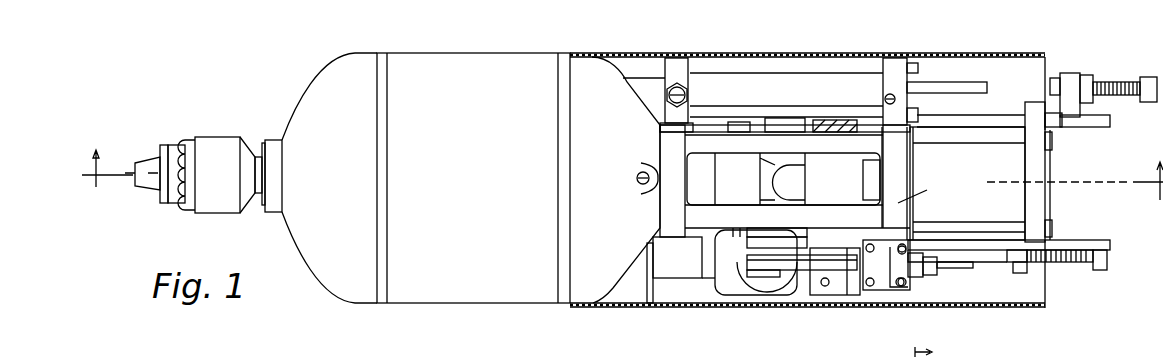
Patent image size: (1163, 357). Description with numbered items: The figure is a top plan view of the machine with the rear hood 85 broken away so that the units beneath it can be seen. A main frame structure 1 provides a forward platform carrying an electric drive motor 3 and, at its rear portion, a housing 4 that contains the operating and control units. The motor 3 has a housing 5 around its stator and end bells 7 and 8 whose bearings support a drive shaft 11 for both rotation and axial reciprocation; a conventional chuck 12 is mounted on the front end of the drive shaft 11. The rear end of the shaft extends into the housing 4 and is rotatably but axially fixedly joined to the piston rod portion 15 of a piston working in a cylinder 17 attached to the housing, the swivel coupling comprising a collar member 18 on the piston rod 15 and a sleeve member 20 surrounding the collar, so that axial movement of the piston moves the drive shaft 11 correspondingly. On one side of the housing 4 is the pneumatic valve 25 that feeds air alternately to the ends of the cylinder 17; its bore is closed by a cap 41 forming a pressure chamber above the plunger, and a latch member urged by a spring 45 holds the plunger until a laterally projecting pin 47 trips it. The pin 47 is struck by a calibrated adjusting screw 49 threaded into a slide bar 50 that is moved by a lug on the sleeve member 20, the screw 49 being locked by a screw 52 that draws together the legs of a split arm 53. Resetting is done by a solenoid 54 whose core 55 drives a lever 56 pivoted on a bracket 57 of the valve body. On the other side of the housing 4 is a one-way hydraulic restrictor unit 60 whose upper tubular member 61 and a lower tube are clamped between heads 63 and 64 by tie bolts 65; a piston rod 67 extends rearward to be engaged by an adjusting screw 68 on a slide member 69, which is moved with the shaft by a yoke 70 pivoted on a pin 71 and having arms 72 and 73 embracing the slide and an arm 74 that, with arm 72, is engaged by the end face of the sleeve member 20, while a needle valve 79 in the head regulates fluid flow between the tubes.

The main frame structure 1 is at (626, 285).
The electric drive motor 3 is at (483, 313).
The housing 4 is at (622, 176).
The motor housing 5 is at (430, 290).
The end bell 7 is at (340, 280).
The end bell 8 is at (592, 285).
The drive shaft 11 is at (703, 163).
The chuck 12 is at (223, 143).
The piston rod portion 15 is at (880, 177).
The cylinder 17 is at (1010, 207).
The collar member 18 is at (880, 187).
The sleeve member 20 is at (843, 192).
The pneumatic valve 25 is at (885, 282).
The cap 41 is at (913, 272).
The spring 45 is at (852, 277).
The pin 47 is at (927, 240).
The adjusting screw 49 is at (1065, 263).
The slide bar 50 is at (1067, 245).
The screw 52 is at (1020, 273).
The split arm 53 is at (1018, 260).
The solenoid 54 is at (762, 287).
The core 55 is at (740, 295).
The lever 56 is at (800, 263).
The bracket 57 is at (838, 282).
The hydraulic restrictor unit 60 is at (725, 73).
The upper tubular member 61 is at (770, 88).
The head 63 is at (895, 68).
The head 64 is at (680, 65).
The tie bolts 65 is at (833, 112).
The piston rod 67 is at (940, 88).
The adjusting screw 68 is at (1115, 82).
The slide member 69 is at (1075, 117).
The yoke 70 is at (722, 180).
The pin 71 is at (738, 125).
The arm 72 is at (767, 158).
The arm 73 is at (798, 125).
The arm 74 is at (782, 202).
The needle valve 79 is at (665, 103).
The hood 85 is at (992, 308).